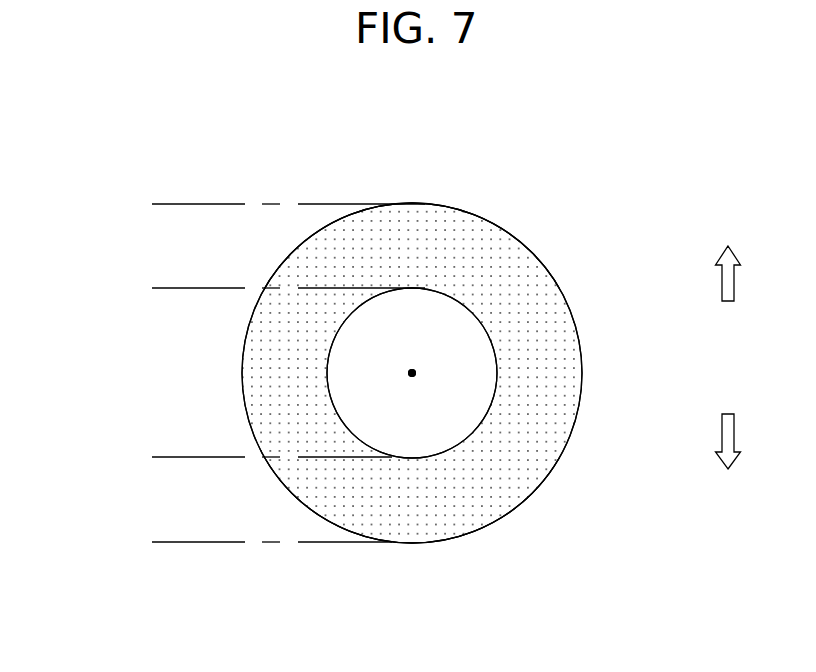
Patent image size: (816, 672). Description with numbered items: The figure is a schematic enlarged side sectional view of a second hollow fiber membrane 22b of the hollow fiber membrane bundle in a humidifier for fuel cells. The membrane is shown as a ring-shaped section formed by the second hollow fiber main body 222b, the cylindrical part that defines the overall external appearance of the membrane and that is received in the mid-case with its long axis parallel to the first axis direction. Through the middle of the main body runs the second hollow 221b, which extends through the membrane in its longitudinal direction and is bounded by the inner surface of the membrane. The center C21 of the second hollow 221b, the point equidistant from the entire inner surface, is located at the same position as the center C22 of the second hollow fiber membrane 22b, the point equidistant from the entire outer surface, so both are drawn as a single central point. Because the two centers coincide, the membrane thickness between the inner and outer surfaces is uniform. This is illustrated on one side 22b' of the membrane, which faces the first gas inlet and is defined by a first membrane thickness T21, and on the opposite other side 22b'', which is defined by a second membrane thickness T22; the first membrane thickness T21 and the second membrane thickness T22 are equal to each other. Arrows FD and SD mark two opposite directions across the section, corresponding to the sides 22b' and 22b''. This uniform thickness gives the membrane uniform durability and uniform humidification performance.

The second hollow fiber membrane 22b is at (320, 333).
The one side of the second hollow fiber membrane 22b' is at (412, 221).
The other side of the second hollow fiber membrane 22b'' is at (412, 529).
The second hollow fiber main body 222b is at (214, 402).
The second hollow 221b is at (455, 405).
The center of the second hollow C21 is at (412, 373).
The center of the second hollow fiber membrane C22 is at (412, 373).
The first membrane thickness T21 is at (161, 210).
The second membrane thickness T22 is at (161, 463).
The first direction FD is at (727, 261).
The second direction SD is at (727, 456).